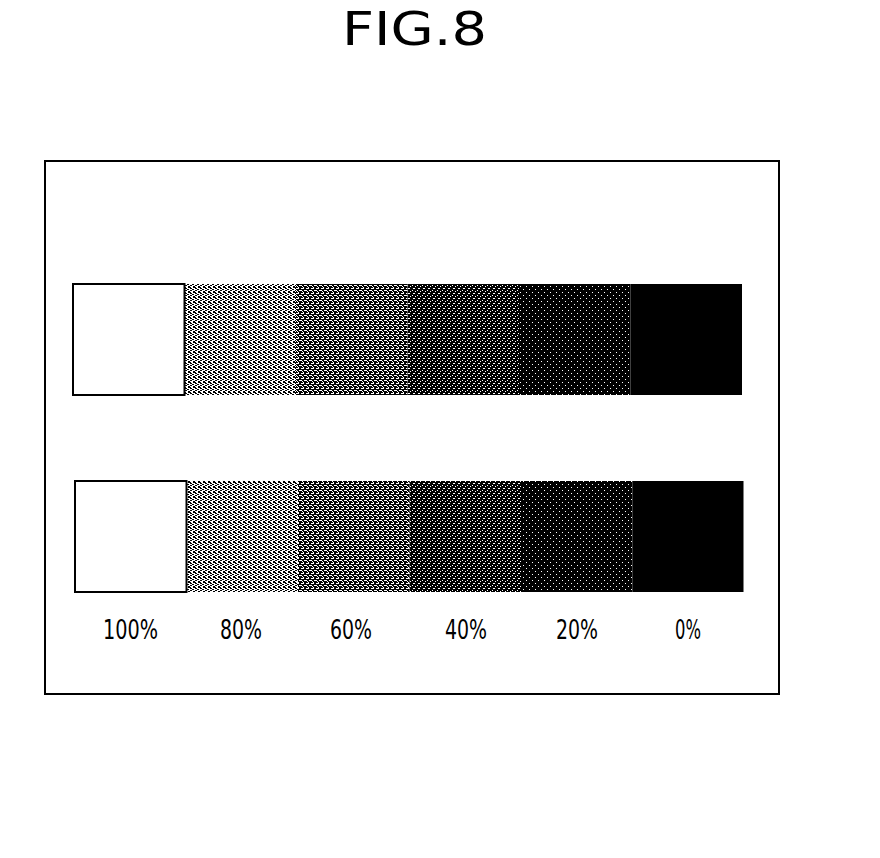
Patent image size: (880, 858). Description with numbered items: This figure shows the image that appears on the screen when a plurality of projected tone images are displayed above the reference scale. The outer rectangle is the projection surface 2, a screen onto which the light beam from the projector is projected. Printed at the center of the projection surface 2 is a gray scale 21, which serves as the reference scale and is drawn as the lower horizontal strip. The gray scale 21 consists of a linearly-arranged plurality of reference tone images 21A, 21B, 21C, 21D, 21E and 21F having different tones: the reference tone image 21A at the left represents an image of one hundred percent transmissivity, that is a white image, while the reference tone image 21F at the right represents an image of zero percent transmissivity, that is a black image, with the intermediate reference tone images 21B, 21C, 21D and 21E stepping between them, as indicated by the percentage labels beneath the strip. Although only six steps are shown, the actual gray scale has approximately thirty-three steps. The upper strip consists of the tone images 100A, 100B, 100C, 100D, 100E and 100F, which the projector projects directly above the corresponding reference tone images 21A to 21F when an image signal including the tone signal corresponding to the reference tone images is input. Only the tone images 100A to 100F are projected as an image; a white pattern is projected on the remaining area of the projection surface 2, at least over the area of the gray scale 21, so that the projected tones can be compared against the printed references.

The projection surface 2 is at (367, 694).
The gray scale 21 is at (421, 544).
The reference tone image 21A is at (123, 481).
The reference tone image 21B is at (234, 481).
The reference tone image 21C is at (346, 481).
The reference tone image 21D is at (458, 481).
The reference tone image 21E is at (569, 481).
The reference tone image 21F is at (680, 481).
The tone image 100A is at (123, 284).
The tone image 100B is at (234, 284).
The tone image 100C is at (346, 284).
The tone image 100D is at (458, 284).
The tone image 100E is at (569, 284).
The tone image 100F is at (680, 284).